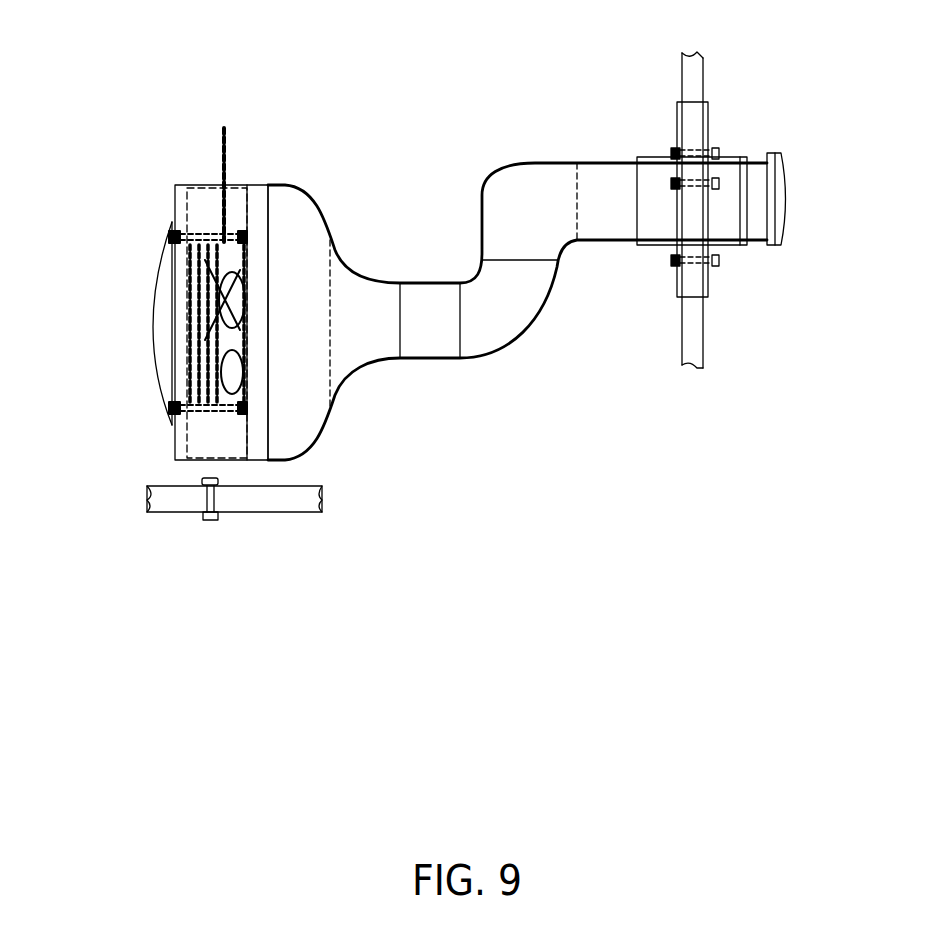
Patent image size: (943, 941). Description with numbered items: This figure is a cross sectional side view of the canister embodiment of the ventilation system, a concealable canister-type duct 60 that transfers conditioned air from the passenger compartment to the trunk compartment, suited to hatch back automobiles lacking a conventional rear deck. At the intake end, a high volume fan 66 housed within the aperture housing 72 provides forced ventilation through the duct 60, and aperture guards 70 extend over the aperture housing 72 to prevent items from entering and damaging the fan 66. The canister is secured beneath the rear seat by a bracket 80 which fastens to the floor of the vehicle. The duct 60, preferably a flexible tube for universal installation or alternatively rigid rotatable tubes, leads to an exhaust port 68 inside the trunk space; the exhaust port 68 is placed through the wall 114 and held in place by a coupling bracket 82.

The concealable duct 60 is at (482, 358).
The high volume fan 66 is at (232, 330).
The exhaust port 68 is at (785, 160).
The aperture guards 70 is at (150, 356).
The aperture housing 72 is at (248, 183).
The bracket 80 is at (205, 520).
The coupling bracket 82 is at (717, 272).
The wall 114 is at (707, 353).